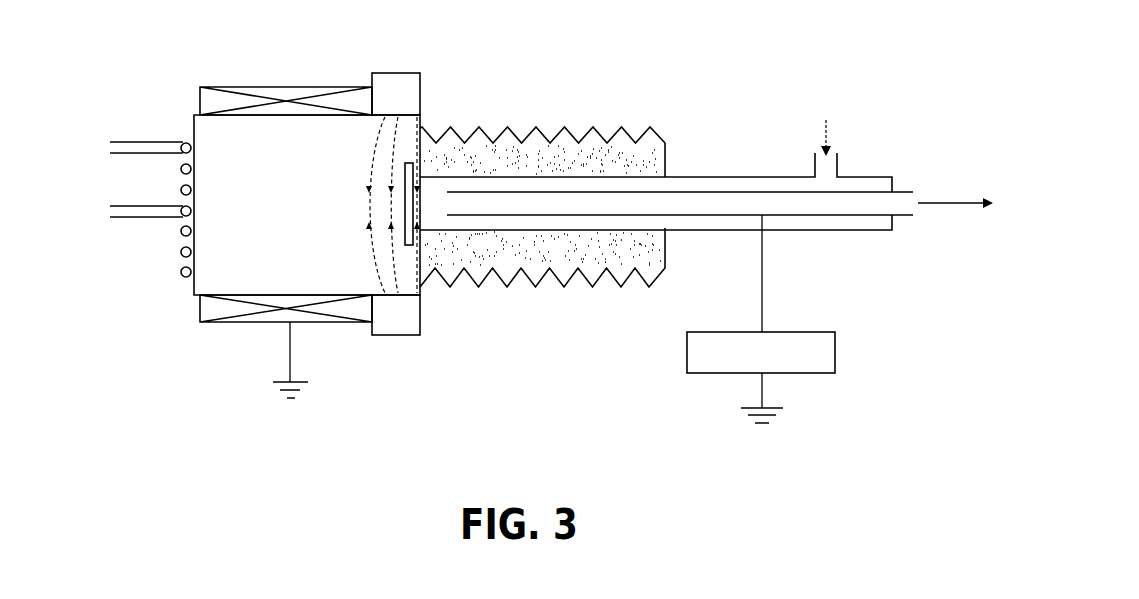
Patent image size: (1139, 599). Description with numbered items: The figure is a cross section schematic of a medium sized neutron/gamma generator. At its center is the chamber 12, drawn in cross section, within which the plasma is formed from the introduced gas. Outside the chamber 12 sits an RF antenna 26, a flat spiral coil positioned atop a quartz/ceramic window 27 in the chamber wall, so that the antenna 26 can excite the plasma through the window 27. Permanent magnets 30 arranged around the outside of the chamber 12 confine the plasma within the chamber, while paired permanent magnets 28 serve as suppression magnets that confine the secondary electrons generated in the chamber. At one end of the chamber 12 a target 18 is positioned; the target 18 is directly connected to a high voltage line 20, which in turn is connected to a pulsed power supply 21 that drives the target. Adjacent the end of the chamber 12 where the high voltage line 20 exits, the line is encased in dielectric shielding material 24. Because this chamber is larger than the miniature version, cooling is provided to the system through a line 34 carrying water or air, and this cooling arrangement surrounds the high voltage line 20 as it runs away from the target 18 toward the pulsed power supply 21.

The chamber 12 is at (243, 300).
The target 18 is at (409, 163).
The high voltage line 20 is at (902, 197).
The pulsed power supply 21 is at (835, 357).
The dielectric shielding material 24 is at (545, 127).
The RF antenna 26 is at (130, 205).
The quartz/ceramic window 27 is at (195, 287).
The paired permanent magnets 28 is at (398, 73).
The permanent magnets 30 is at (271, 87).
The cooling line 34 is at (885, 222).